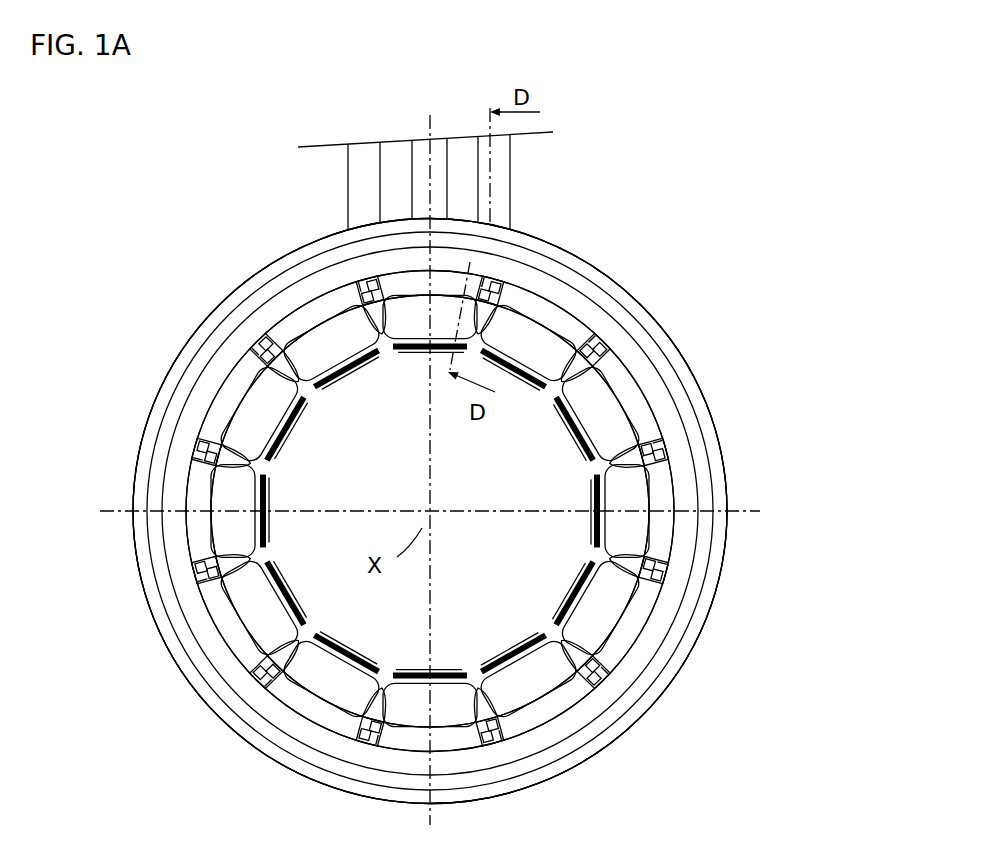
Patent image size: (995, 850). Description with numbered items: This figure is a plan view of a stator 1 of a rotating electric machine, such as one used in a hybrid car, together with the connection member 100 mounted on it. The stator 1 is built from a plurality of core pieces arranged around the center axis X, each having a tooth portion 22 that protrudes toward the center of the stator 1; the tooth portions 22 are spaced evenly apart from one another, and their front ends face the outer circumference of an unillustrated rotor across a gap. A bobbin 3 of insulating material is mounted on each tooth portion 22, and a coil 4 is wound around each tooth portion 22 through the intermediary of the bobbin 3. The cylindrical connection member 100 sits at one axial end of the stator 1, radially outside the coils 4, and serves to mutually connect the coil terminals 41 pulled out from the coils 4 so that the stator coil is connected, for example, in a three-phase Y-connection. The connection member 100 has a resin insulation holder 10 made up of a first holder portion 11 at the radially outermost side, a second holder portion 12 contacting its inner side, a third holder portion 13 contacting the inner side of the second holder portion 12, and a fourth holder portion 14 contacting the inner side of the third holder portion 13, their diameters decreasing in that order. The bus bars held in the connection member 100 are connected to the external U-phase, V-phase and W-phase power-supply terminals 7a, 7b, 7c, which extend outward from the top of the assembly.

The stator 1 is at (207, 283).
The bobbin 3 is at (225, 400).
The coil 4 is at (220, 493).
The external U-phase power-supply terminal 7a is at (352, 181).
The external V-phase power-supply terminal 7b is at (417, 168).
The external W-phase power-supply terminal 7c is at (480, 162).
The insulation holder 10 is at (172, 360).
The first holder portion 11 is at (630, 295).
The second holder portion 12 is at (660, 363).
The third holder portion 13 is at (660, 405).
The fourth holder portion 14 is at (498, 511).
The tooth portion 22 is at (290, 575).
The coil terminal 41 is at (347, 293).
The connection member 100 is at (570, 257).